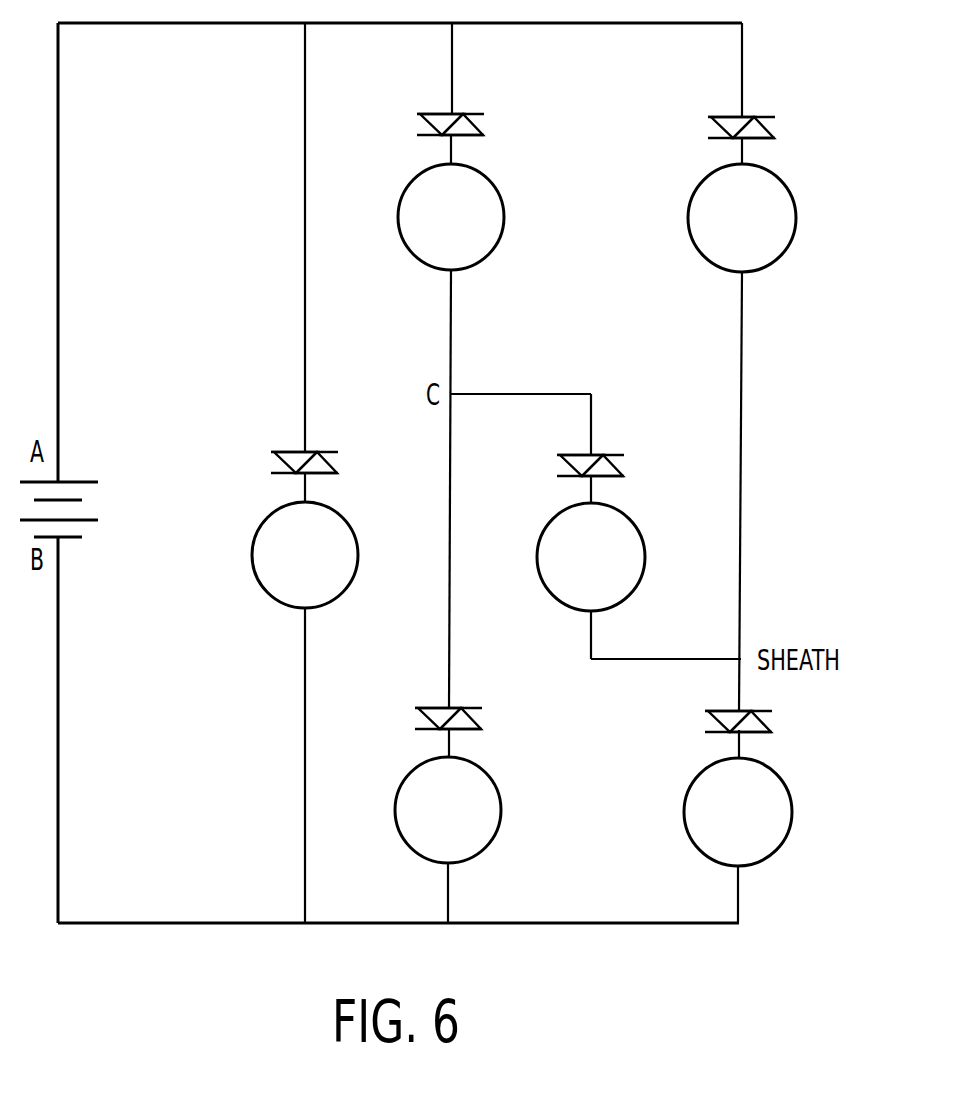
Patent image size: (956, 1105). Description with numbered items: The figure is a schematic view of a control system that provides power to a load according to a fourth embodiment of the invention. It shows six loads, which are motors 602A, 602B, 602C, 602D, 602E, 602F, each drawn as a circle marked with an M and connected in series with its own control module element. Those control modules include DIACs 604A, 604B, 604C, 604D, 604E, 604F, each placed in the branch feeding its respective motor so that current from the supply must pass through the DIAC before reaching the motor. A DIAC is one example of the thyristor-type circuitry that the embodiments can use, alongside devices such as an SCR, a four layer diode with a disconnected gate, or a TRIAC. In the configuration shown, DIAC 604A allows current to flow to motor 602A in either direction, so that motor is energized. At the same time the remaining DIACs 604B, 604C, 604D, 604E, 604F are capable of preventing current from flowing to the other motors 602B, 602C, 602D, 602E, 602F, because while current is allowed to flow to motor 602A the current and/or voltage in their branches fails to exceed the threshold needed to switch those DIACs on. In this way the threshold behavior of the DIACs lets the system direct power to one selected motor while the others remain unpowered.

The motor 602A is at (345, 521).
The motor 602B is at (492, 183).
The motor 602C is at (489, 777).
The motor 602D is at (632, 522).
The motor 602E is at (783, 184).
The motor 602F is at (778, 778).
The DIAC 604A is at (290, 451).
The DIAC 604B is at (437, 113).
The DIAC 604C is at (435, 707).
The DIAC 604D is at (612, 454).
The DIAC 604E is at (727, 116).
The DIAC 604F is at (722, 710).